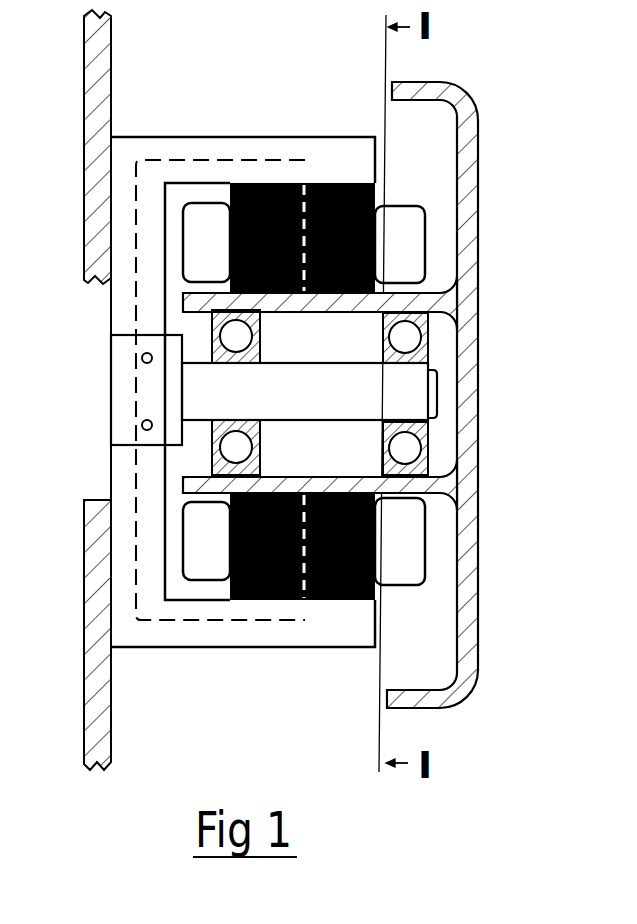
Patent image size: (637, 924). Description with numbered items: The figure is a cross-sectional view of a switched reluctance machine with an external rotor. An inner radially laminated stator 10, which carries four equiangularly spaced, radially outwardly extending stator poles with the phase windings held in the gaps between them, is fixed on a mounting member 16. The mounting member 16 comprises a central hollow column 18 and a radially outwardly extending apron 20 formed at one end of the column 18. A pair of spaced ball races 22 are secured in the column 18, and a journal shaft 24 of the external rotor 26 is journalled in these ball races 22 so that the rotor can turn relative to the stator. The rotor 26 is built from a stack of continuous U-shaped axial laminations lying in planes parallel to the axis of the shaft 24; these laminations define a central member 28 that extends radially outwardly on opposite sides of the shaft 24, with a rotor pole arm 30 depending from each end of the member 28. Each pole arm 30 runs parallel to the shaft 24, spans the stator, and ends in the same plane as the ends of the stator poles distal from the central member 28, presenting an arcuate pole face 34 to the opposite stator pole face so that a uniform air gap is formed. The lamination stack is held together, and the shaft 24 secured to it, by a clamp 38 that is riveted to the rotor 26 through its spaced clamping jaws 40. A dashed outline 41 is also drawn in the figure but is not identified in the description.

The stator 10 is at (357, 607).
The mounting member 16 is at (480, 148).
The central hollow column 18 is at (328, 313).
The apron 20 is at (474, 307).
The ball races 22 is at (252, 314).
The journal shaft 24 is at (418, 390).
The external rotor 26 is at (281, 137).
The central member 28 is at (120, 293).
The rotor pole arm 30 is at (198, 147).
The pole face 34 is at (223, 187).
The clamp 38 is at (108, 387).
The clamping jaws 40 is at (118, 432).
The mounting outline 41 is at (138, 165).